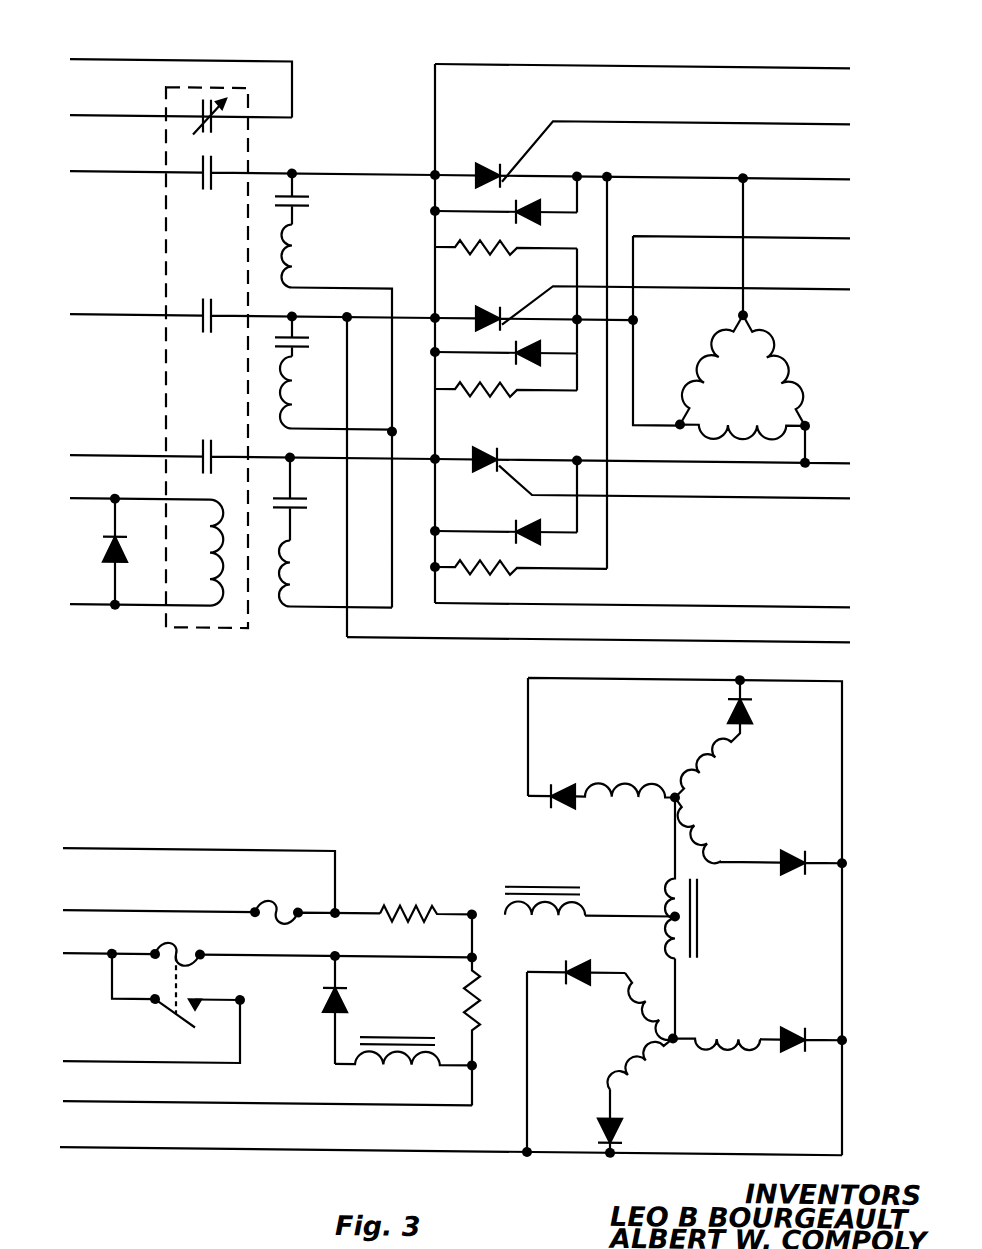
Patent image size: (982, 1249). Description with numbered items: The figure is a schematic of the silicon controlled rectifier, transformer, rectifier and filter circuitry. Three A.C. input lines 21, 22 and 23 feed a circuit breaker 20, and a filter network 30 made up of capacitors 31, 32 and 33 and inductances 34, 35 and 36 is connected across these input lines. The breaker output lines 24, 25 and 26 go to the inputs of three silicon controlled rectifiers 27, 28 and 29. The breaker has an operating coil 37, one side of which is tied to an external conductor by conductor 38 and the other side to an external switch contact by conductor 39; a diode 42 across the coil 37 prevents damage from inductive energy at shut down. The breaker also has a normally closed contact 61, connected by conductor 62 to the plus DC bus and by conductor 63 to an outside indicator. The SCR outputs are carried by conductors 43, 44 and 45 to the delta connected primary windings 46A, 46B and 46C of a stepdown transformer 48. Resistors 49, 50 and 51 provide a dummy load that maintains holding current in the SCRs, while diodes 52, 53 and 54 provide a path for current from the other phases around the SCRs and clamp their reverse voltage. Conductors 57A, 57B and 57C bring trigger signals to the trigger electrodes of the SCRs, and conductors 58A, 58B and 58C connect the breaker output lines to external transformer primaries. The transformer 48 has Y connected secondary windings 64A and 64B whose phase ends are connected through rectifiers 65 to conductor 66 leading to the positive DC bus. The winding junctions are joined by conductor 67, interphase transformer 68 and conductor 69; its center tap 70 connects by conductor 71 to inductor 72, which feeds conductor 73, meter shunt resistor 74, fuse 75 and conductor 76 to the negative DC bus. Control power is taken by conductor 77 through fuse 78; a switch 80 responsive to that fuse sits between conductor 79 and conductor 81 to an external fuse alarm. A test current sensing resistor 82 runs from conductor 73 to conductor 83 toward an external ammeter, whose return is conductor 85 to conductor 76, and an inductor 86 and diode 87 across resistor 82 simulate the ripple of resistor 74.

The circuit breaker 20 is at (218, 403).
The A.C. input line 21 is at (113, 175).
The A.C. input line 22 is at (108, 318).
The A.C. input line 23 is at (115, 459).
The output line 24 is at (265, 172).
The output line 25 is at (262, 318).
The output line 26 is at (345, 463).
The silicon controlled rectifier 27 is at (486, 165).
The silicon controlled rectifier 28 is at (497, 307).
The silicon controlled rectifier 29 is at (492, 452).
The filter network 30 is at (340, 384).
The capacitor 31 is at (312, 203).
The capacitor 32 is at (312, 343).
The capacitor 33 is at (291, 490).
The inductance 34 is at (303, 246).
The inductance 35 is at (296, 399).
The inductance 36 is at (295, 592).
The operating coil 37 is at (195, 552).
The conductor 38 is at (103, 502).
The conductor 39 is at (98, 608).
The diode 42 is at (103, 551).
The conductor 43 is at (815, 175).
The conductor 44 is at (816, 234).
The conductor 45 is at (815, 459).
The primary winding 46A is at (740, 338).
The primary winding 46B is at (786, 386).
The primary winding 46C is at (766, 421).
The stepdown transformer 48 is at (693, 677).
The resistor 49 is at (498, 248).
The resistor 50 is at (497, 392).
The resistor 51 is at (495, 570).
The diode 52 is at (536, 205).
The diode 53 is at (530, 345).
The diode 54 is at (516, 527).
The conductor 57A is at (815, 120).
The conductor 57B is at (815, 285).
The conductor 57C is at (808, 494).
The conductor 58A is at (815, 64).
The conductor 58B is at (810, 638).
The conductor 58C is at (810, 603).
The normally closed contact 61 is at (213, 100).
The conductor 62 is at (105, 119).
The conductor 63 is at (104, 63).
The secondary winding 64A is at (678, 792).
The secondary winding 64B is at (712, 1025).
The rectifier 65 is at (753, 710).
The conductor 66 is at (70, 1151).
The conductor 67 is at (673, 845).
The interphase transformer 68 is at (702, 906).
The conductor 69 is at (698, 957).
The center tap 70 is at (673, 912).
The conductor 71 is at (621, 916).
The inductor 72 is at (548, 892).
The conductor 73 is at (484, 907).
The meter shunt resistor 74 is at (403, 907).
The fuse 75 is at (262, 903).
The conductor 76 is at (94, 914).
The conductor 77 is at (408, 958).
The fuse 78 is at (182, 950).
The conductor 79 is at (82, 957).
The switch 80 is at (180, 1027).
The conductor 81 is at (98, 1033).
The test current sensing resistor 82 is at (481, 990).
The conductor 83 is at (75, 1105).
The conductor 85 is at (88, 852).
The inductor 86 is at (398, 1070).
The diode 87 is at (329, 1012).